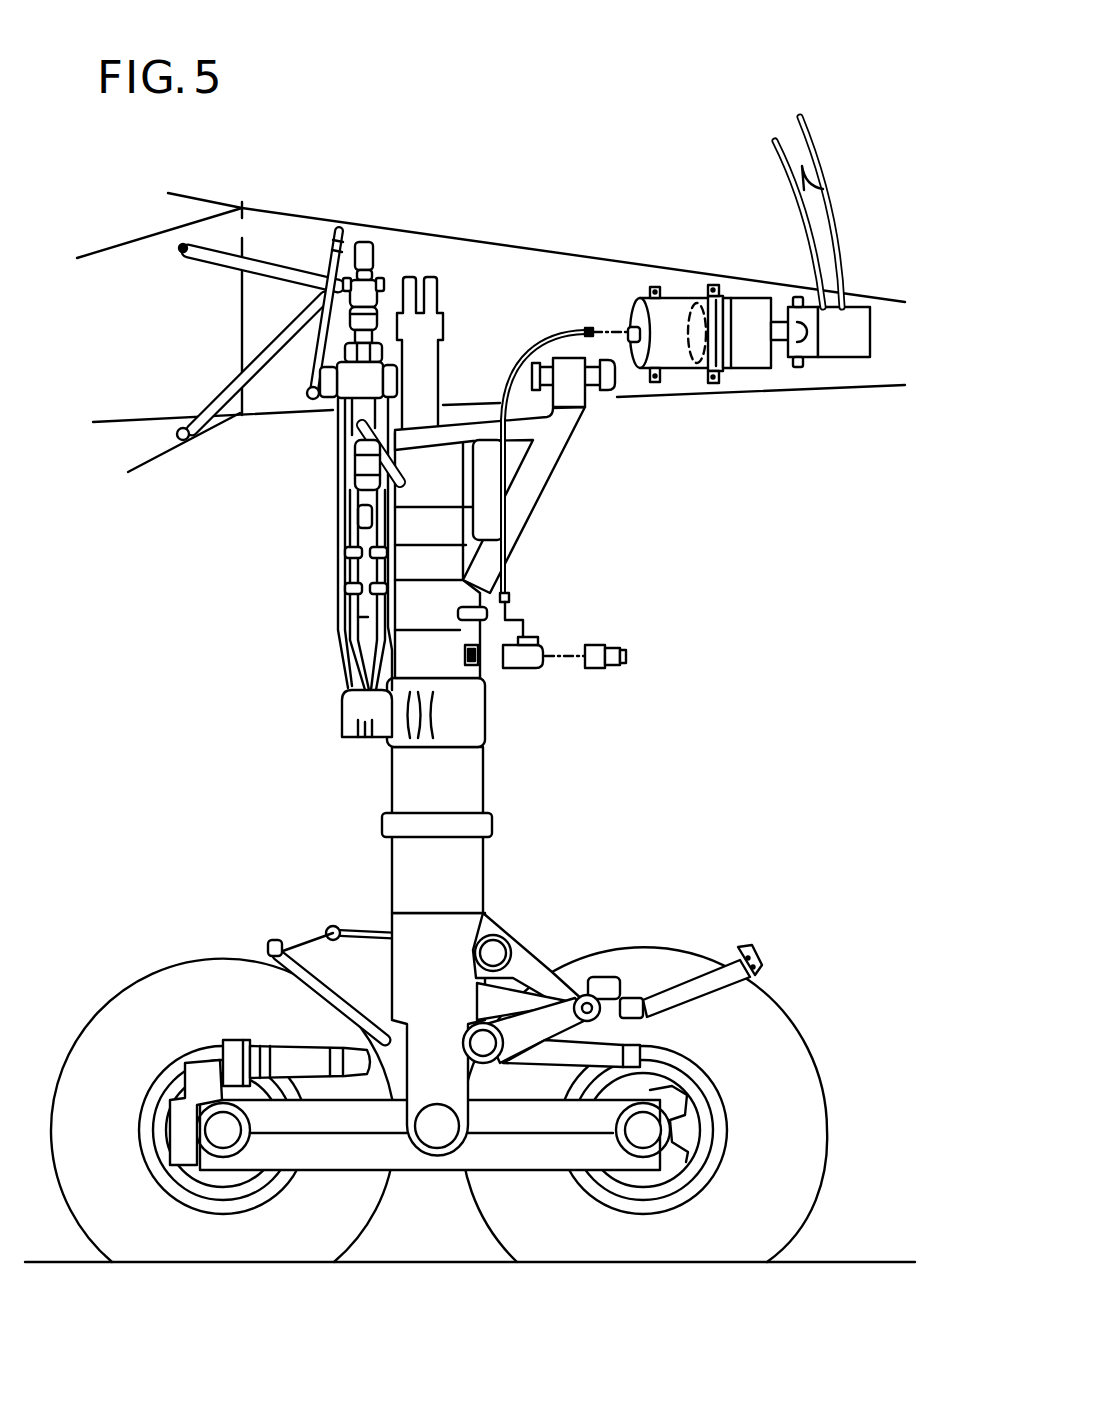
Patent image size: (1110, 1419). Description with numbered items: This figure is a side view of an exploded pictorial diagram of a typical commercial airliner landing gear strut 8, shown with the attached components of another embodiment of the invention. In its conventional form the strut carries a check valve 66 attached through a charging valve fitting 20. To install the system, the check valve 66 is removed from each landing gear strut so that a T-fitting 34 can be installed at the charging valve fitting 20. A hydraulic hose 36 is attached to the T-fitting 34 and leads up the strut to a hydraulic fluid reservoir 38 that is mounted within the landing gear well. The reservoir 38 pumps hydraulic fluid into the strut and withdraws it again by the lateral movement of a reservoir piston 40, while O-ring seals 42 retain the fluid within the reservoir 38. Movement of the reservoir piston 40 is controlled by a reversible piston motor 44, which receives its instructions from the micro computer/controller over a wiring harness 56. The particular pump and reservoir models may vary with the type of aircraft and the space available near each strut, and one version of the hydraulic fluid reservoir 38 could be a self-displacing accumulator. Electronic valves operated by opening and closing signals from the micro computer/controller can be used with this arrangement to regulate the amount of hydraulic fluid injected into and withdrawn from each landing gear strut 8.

The landing gear strut 8 is at (410, 857).
The charging valve fitting 20 is at (487, 667).
The T-fitting 34 is at (545, 647).
The hydraulic hose 36 is at (547, 333).
The hydraulic fluid reservoir 38 is at (662, 310).
The reservoir piston 40 is at (757, 350).
The O-ring seals 42 is at (700, 372).
The reversible piston motor 44 is at (856, 340).
The wiring harness 56 is at (807, 180).
The check valve 66 is at (607, 647).